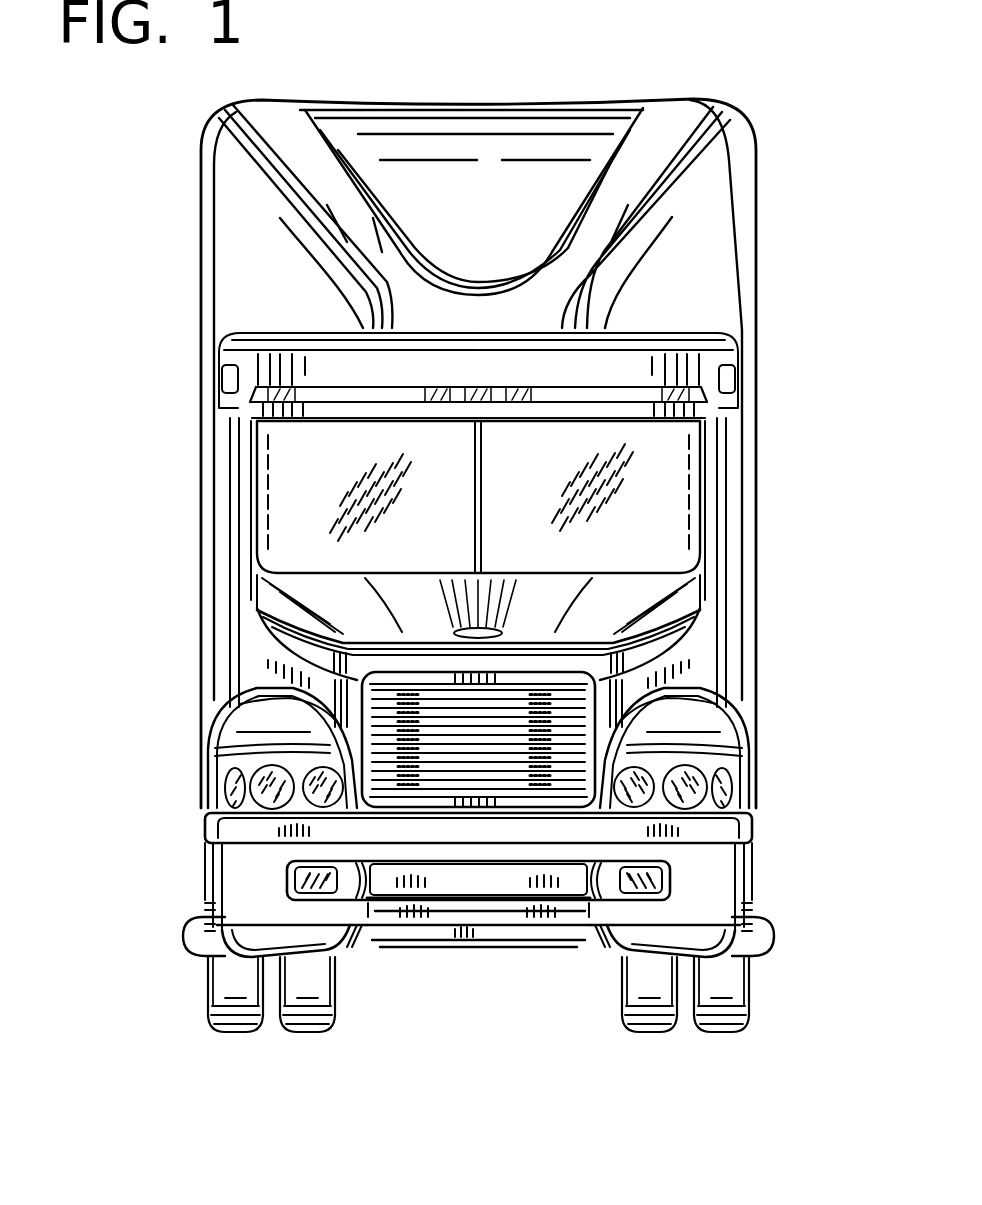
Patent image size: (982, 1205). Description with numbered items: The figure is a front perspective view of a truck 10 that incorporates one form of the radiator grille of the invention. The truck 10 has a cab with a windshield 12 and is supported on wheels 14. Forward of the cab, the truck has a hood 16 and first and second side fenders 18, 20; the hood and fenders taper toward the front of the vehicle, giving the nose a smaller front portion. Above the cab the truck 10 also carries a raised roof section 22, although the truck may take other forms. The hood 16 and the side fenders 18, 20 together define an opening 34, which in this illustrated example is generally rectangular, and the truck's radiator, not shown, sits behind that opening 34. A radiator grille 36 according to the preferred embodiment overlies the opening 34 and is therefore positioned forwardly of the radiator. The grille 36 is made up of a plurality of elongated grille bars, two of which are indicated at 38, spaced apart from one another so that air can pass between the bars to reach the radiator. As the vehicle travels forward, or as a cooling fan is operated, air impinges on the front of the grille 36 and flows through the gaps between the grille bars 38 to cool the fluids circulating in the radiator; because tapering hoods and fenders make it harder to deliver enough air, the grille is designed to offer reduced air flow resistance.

The truck 10 is at (770, 371).
The windshield 12 is at (655, 497).
The wheels 14 is at (732, 980).
The hood 16 is at (632, 598).
The first side fender 18 is at (695, 672).
The second side fender 20 is at (263, 674).
The raised roof section 22 is at (700, 240).
The opening 34 is at (604, 855).
The radiator grille 36 is at (380, 777).
The grille bars 38 is at (462, 765).